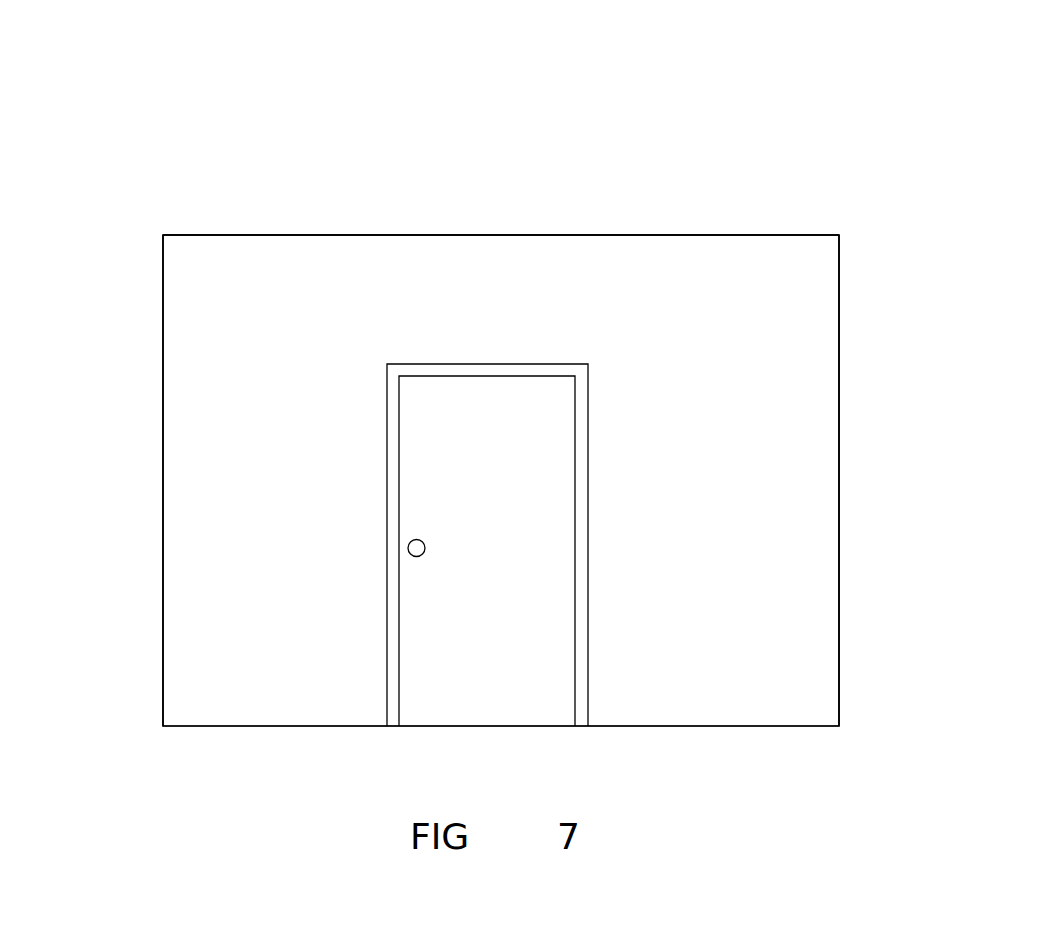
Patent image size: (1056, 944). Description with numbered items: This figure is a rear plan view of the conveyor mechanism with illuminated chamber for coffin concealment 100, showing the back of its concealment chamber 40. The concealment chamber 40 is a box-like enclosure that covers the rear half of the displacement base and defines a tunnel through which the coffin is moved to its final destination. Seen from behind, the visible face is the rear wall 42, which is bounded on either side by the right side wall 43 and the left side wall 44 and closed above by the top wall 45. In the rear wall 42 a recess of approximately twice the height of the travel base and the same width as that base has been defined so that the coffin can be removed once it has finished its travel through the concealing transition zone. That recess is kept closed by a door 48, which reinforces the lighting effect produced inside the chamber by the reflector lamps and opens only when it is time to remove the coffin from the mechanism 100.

The conveyor mechanism with illuminated chamber for coffin concealment 100 is at (591, 383).
The concealment chamber 40 is at (609, 480).
The rear wall 42 is at (230, 418).
The right side wall 43 is at (220, 638).
The left side wall 44 is at (807, 630).
The top wall 45 is at (493, 285).
The door 48 is at (517, 678).